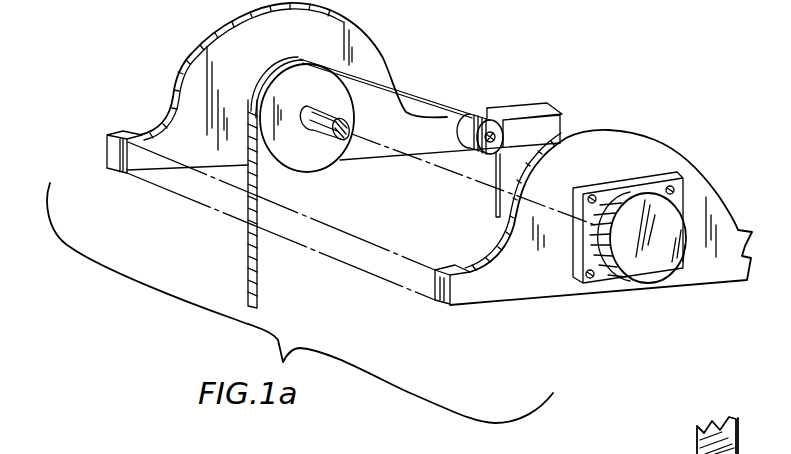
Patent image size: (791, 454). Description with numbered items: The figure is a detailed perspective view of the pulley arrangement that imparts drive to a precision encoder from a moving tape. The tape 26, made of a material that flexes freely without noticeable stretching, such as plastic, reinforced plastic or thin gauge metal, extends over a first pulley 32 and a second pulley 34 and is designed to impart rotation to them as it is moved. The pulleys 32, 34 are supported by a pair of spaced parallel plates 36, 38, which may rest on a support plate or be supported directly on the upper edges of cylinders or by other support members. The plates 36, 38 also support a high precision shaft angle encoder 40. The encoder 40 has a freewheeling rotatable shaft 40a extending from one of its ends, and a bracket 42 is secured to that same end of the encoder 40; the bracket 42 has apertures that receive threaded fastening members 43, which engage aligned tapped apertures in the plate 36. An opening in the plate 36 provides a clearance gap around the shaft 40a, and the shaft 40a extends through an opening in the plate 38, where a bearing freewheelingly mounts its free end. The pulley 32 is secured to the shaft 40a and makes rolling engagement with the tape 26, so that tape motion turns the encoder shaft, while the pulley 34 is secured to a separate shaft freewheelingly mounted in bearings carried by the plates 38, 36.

The tape 26 is at (404, 92).
The first pulley 32 is at (310, 165).
The second pulley 34 is at (476, 142).
The plate 36 is at (463, 297).
The plate 38 is at (176, 76).
The shaft angle encoder 40 is at (641, 273).
The rotatable shaft 40a is at (340, 110).
The bracket 42 is at (587, 244).
The threaded fastening members 43 is at (588, 199).